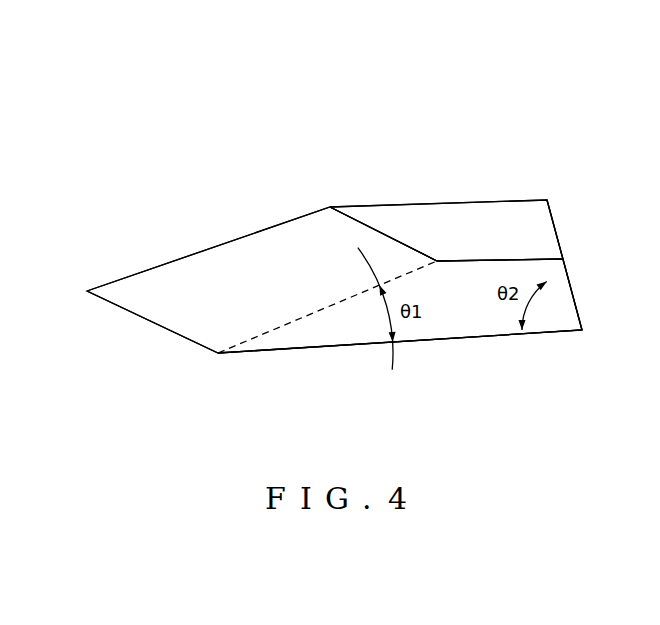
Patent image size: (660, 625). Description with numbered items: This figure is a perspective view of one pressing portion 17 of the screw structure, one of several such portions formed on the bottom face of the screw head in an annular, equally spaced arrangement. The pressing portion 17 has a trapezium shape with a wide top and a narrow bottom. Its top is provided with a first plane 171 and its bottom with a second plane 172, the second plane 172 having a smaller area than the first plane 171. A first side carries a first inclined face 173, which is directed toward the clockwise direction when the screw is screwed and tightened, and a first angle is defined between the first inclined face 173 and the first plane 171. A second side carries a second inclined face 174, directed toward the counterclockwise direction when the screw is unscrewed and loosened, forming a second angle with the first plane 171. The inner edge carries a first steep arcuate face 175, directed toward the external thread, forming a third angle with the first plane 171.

The pressing portion 17 is at (350, 160).
The first plane 171 is at (453, 337).
The second plane 172 is at (452, 215).
The first inclined face 173 is at (232, 257).
The second inclined face 174 is at (563, 262).
The first steep arcuate face 175 is at (478, 322).